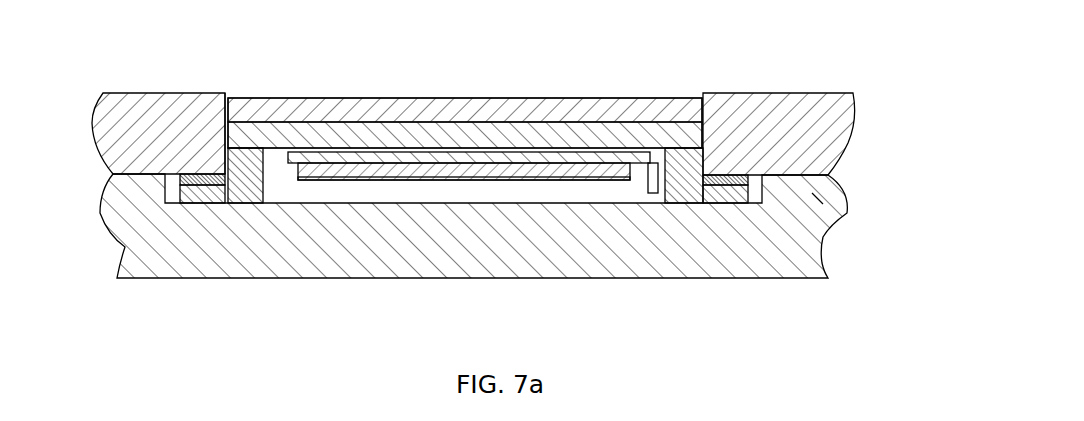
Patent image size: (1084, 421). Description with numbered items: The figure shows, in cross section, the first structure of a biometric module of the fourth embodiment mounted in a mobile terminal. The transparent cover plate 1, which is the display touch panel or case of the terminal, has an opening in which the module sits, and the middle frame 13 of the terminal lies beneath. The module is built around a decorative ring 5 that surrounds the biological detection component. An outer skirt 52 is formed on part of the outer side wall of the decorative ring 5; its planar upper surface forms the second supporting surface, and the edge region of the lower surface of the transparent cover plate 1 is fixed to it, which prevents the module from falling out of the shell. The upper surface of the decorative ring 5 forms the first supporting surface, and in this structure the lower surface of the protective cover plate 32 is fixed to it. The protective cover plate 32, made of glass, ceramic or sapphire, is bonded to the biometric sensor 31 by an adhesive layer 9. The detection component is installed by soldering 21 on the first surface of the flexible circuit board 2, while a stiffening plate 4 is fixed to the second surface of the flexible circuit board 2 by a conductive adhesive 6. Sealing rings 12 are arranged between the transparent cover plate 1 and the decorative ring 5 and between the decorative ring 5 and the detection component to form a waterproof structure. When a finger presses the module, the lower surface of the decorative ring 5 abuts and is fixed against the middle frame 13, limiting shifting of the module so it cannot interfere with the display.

The transparent cover plate 1 is at (197, 95).
The protective cover plate 32 is at (387, 97).
The biometric sensor 31 is at (610, 124).
The adhesive layer 9 is at (505, 100).
The flexible circuit board 2 is at (288, 157).
The soldering 21 is at (373, 172).
The stiffening plate 4 is at (557, 178).
The conductive adhesive 6 is at (450, 179).
The sealing ring 12 is at (192, 184).
The outer skirt 52 is at (203, 197).
The decorative ring 5 is at (755, 210).
The middle frame 13 is at (845, 213).